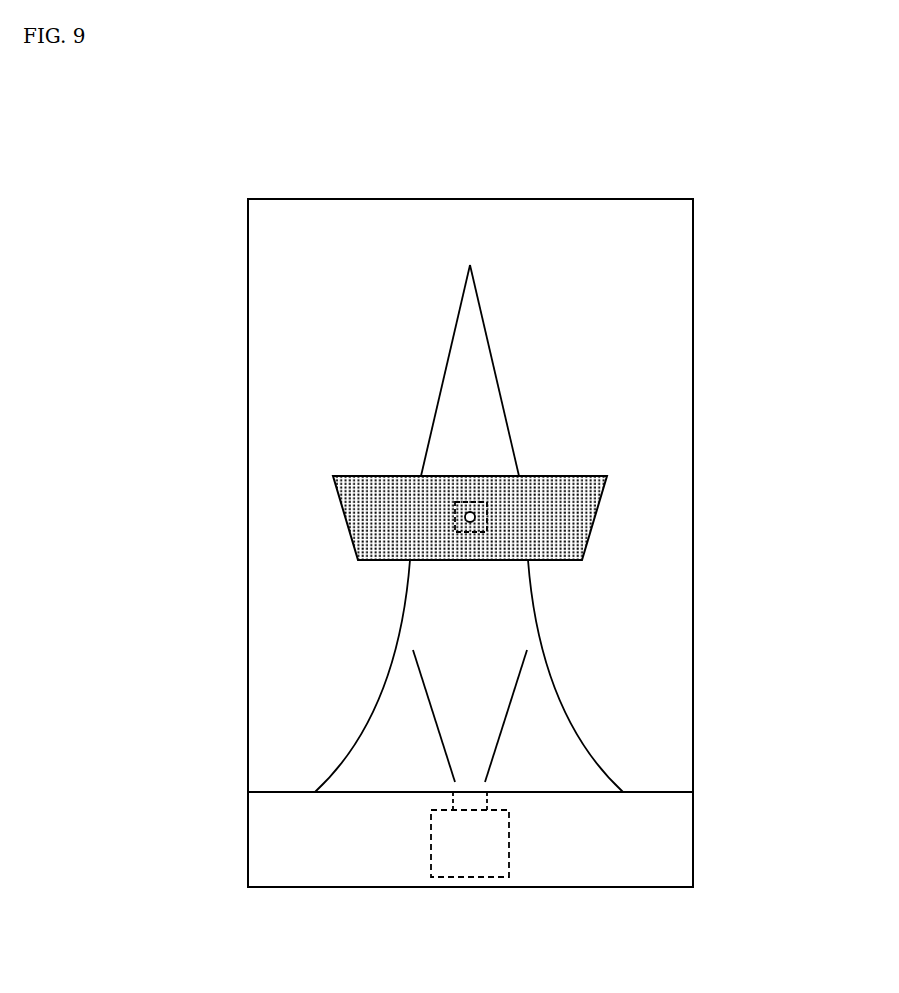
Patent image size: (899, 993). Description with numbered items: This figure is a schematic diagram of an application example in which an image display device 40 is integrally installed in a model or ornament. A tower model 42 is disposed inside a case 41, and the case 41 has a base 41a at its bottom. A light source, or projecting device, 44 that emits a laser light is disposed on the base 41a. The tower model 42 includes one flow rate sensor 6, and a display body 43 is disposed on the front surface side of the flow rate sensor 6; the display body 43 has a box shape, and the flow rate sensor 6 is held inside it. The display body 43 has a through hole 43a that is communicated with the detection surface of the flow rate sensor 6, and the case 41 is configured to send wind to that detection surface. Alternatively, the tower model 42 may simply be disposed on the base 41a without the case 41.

The image display device 40 is at (630, 533).
The case 41 is at (693, 284).
The base 41a is at (685, 845).
The tower model 42 is at (501, 398).
The display body 43 is at (350, 508).
The through hole 43a is at (462, 520).
The flow rate sensor 6 is at (510, 526).
The light source (projecting device) 44 is at (509, 850).